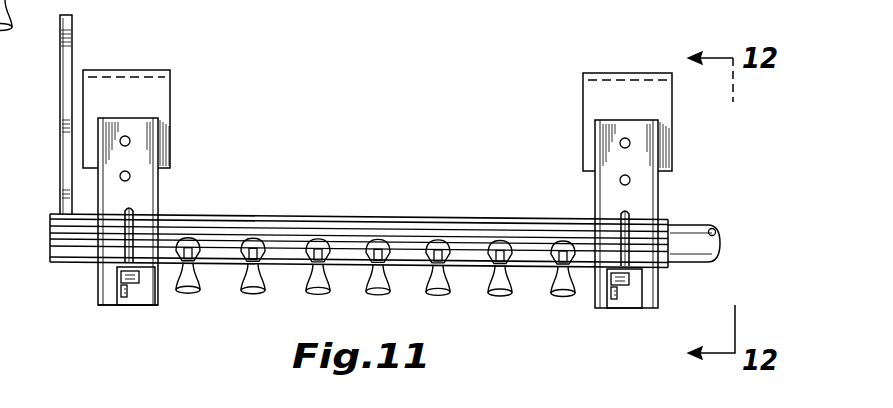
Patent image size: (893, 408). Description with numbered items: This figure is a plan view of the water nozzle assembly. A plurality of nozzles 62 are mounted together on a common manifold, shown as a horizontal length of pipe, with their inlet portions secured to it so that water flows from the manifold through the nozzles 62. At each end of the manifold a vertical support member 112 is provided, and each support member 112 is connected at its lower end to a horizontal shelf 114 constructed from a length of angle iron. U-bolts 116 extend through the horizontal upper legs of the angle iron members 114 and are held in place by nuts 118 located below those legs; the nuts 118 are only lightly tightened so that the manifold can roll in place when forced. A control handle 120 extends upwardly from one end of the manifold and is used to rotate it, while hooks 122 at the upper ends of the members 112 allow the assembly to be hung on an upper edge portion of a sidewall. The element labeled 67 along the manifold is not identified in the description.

The post 120 is at (73, 42).
The clamp bracket 122 is at (162, 97).
The mounting bracket 112 is at (147, 188).
The hook 116 is at (138, 240).
The rail 67 is at (243, 225).
The hanger 62 is at (196, 292).
The bracket lower portion 114 is at (128, 307).
The fastener box 118 is at (155, 290).